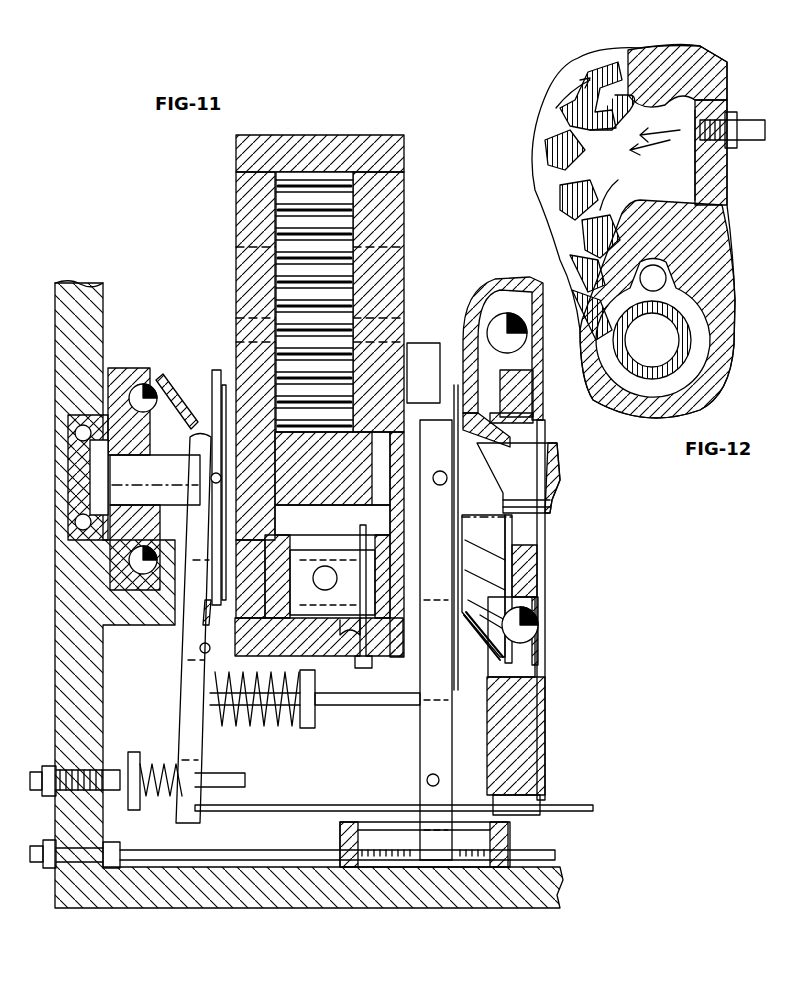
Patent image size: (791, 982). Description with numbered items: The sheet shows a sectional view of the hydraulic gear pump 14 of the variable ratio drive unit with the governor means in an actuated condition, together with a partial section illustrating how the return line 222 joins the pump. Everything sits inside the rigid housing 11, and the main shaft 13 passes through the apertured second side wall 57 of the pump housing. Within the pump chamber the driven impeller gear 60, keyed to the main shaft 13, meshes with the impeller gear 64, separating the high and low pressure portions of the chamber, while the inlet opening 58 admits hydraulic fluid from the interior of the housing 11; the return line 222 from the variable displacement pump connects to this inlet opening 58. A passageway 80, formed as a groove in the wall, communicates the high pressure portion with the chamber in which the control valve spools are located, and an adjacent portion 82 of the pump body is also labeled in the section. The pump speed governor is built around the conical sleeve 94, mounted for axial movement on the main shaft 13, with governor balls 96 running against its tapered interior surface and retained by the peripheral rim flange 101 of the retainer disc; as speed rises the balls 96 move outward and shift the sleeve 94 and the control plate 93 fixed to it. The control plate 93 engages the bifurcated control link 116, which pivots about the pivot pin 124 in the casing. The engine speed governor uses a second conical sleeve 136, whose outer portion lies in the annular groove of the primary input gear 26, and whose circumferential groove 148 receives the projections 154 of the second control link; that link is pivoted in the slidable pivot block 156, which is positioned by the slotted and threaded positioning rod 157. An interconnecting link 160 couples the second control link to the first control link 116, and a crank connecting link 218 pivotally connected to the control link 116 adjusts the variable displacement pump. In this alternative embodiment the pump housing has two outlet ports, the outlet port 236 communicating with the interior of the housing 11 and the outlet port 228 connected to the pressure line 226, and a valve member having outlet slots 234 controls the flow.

In FIG. 11, the housing 11 is at (55, 325).
In FIG. 11, the main shaft 13 is at (560, 480).
In FIG. 11, the hydraulic gear pump 14 is at (227, 201).
In FIG. 12, the hydraulic gear pump 14 is at (728, 268).
In FIG. 11, the primary input gear 26 is at (545, 744).
In FIG. 11, the second side wall 57 is at (381, 198).
In FIG. 12, the inlet opening 58 is at (688, 195).
In FIG. 12, the driven impeller gear 60 is at (595, 212).
In FIG. 12, the impeller gear 64 is at (550, 80).
In FIG. 11, the passageway 80 is at (386, 467).
In FIG. 11, the piston body portion 82 is at (294, 498).
In FIG. 11, the control plate 93 is at (214, 372).
In FIG. 11, the conical sleeve 94 is at (190, 414).
In FIG. 11, the governor balls 96 is at (138, 415).
In FIG. 11, the peripheral rim flange 101 is at (145, 368).
In FIG. 11, the bifurcated control link 116 is at (208, 748).
In FIG. 11, the pivot pin 124 is at (200, 649).
In FIG. 11, the conical sleeve 136 is at (470, 333).
In FIG. 11, the circumferential groove 148 is at (443, 452).
In FIG. 11, the projections 154 is at (447, 478).
In FIG. 11, the slidable pivot block 156 is at (435, 862).
In FIG. 11, the positioning rod 157 is at (252, 848).
In FIG. 11, the interconnecting link 160 is at (334, 718).
In FIG. 11, the crank connecting link 218 is at (540, 812).
In FIG. 12, the return line 222 is at (752, 145).
In FIG. 11, the pressure line 226 is at (352, 706).
In FIG. 11, the outlet port 228 is at (372, 662).
In FIG. 11, the outlet slots 234 is at (352, 592).
In FIG. 11, the outlet port 236 is at (338, 656).